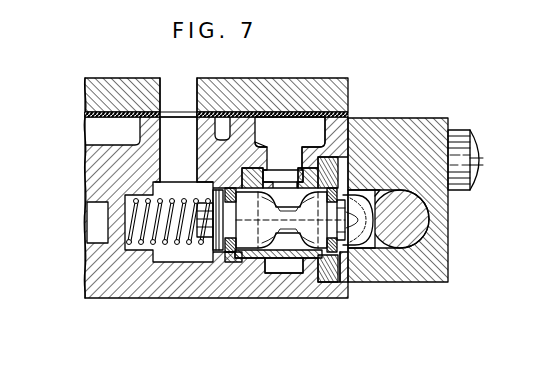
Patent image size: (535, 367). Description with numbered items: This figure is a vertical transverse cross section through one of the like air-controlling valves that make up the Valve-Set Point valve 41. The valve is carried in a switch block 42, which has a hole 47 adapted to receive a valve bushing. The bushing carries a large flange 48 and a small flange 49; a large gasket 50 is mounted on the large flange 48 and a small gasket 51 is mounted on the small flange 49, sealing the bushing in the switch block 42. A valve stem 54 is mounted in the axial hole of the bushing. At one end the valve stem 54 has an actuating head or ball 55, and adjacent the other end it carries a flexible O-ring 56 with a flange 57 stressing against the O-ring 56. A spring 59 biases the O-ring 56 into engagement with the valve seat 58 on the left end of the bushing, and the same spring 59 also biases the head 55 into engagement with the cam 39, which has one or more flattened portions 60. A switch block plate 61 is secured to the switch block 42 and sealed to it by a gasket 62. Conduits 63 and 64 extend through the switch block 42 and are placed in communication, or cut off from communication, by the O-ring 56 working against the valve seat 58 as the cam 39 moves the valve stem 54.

The cam 39 is at (408, 223).
The Valve-Set Point valve 41 is at (430, 137).
The switch block 42 is at (145, 292).
The hole 47 is at (294, 265).
The large flange 48 is at (350, 284).
The small flange 49 is at (255, 275).
The large gasket 50 is at (327, 284).
The small gasket 51 is at (243, 272).
The valve stem 54 is at (285, 225).
The actuating head 55 is at (376, 250).
The O-ring 56 is at (232, 264).
The flange 57 is at (193, 185).
The valve seat 58 is at (230, 187).
The spring 59 is at (171, 246).
The flattened portion 60 is at (376, 187).
The switch block plate 61 is at (245, 93).
The gasket 62 is at (86, 115).
The conduit 63 is at (181, 130).
The conduit 64 is at (296, 128).